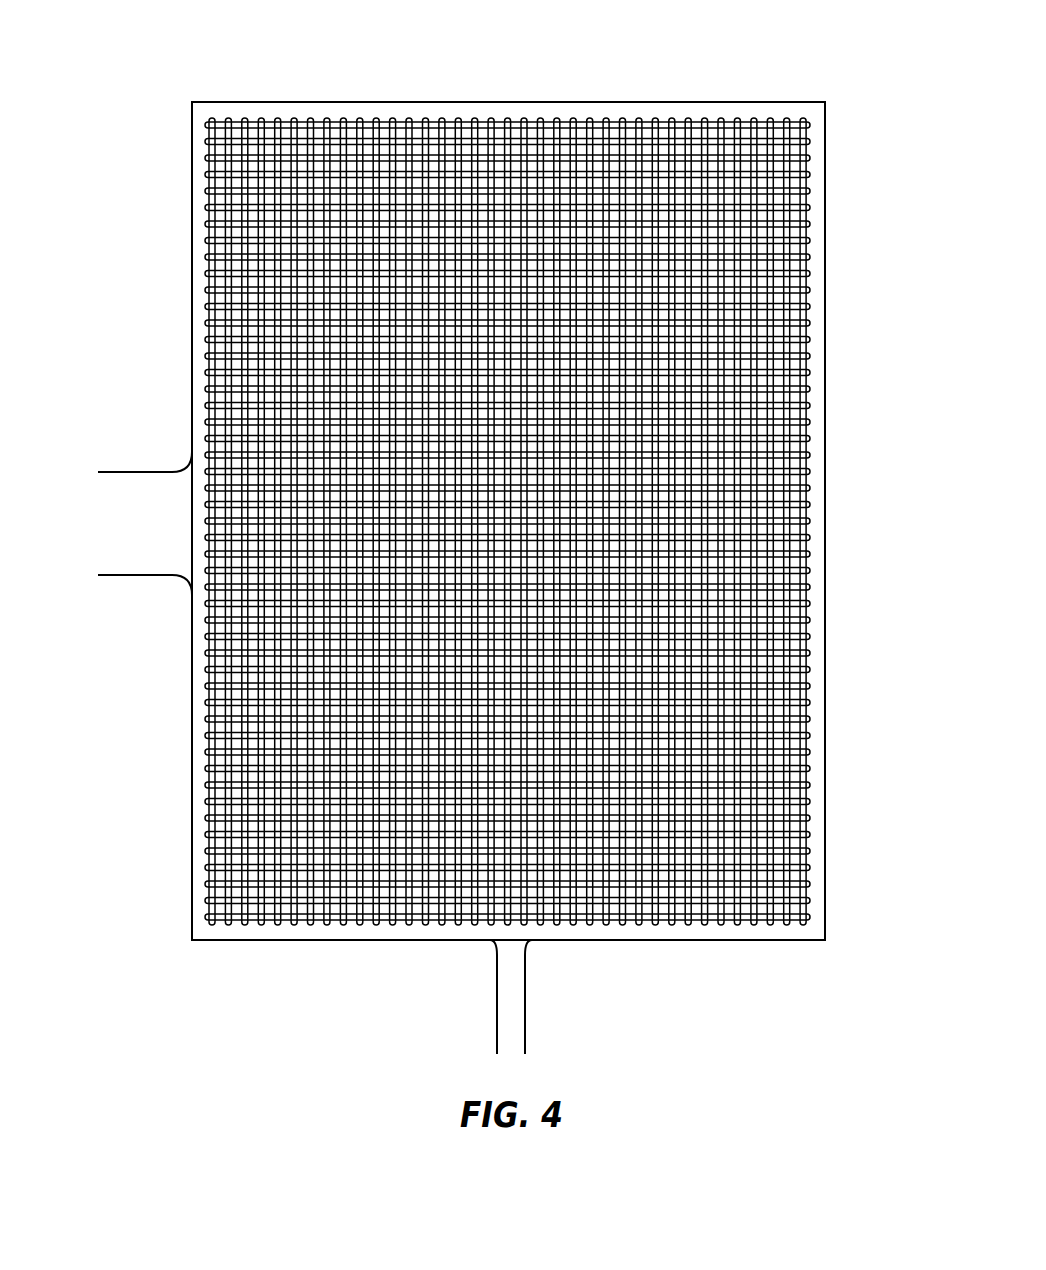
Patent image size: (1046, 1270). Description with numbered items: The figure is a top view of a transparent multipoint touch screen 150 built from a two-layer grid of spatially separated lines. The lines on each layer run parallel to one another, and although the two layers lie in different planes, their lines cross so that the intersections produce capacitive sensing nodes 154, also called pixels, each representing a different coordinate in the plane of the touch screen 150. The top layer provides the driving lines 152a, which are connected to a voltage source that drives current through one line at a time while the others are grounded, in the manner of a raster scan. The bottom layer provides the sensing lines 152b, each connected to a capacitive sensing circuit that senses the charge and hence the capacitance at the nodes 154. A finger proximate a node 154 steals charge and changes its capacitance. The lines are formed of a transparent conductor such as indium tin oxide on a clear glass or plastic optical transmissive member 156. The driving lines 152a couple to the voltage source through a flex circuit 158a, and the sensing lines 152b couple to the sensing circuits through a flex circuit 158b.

The transparent multipoint touch screen 150 is at (508, 481).
The driving lines 152a is at (345, 925).
The sensing lines 152b is at (210, 742).
The capacitive sensing nodes 154 is at (680, 925).
The optical transmissive member 156 is at (652, 102).
The flex circuit 158a is at (497, 1005).
The flex circuit 158b is at (146, 485).